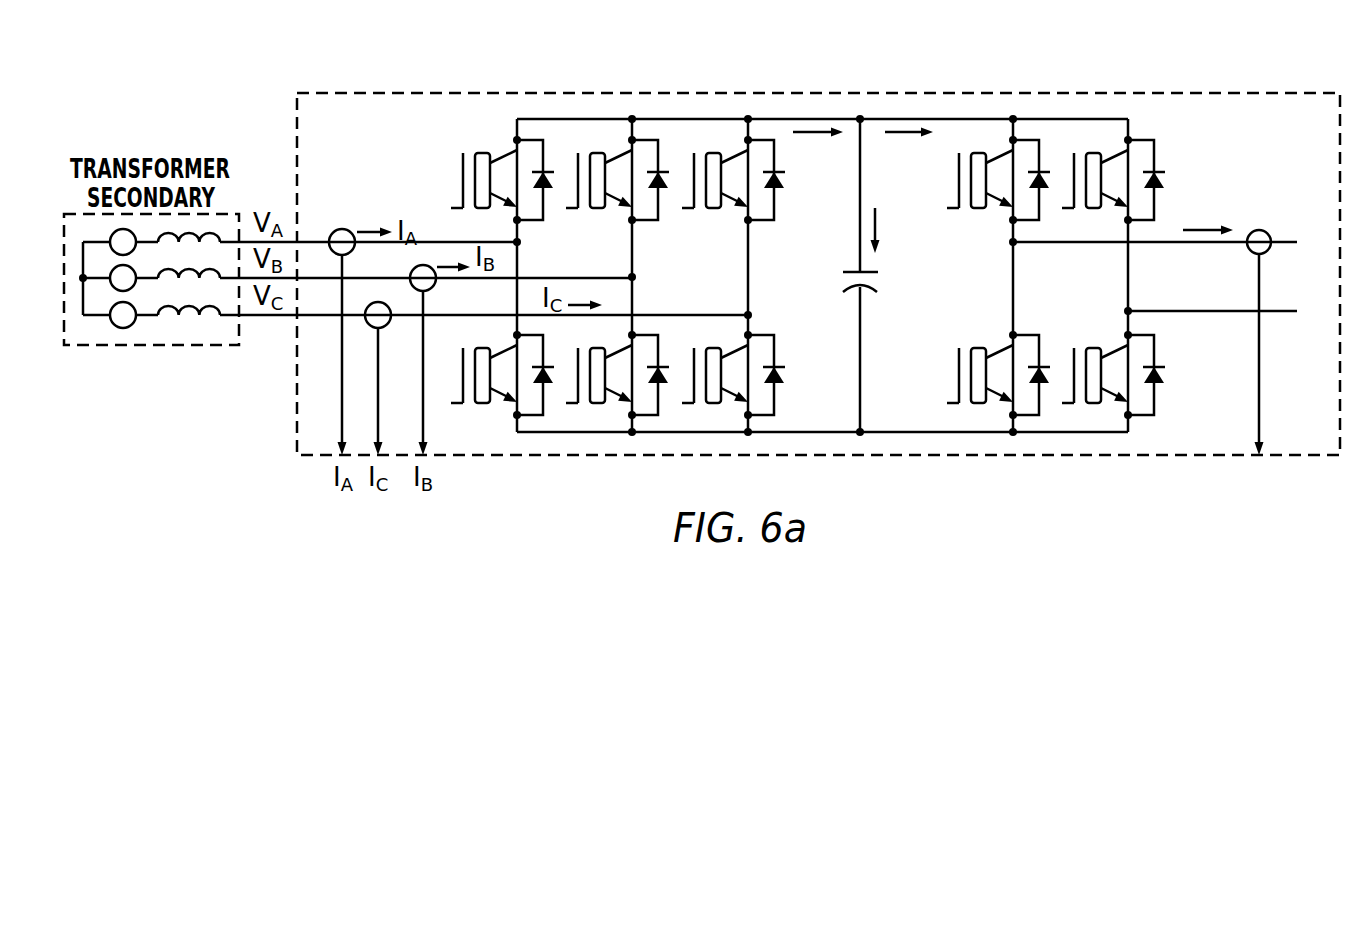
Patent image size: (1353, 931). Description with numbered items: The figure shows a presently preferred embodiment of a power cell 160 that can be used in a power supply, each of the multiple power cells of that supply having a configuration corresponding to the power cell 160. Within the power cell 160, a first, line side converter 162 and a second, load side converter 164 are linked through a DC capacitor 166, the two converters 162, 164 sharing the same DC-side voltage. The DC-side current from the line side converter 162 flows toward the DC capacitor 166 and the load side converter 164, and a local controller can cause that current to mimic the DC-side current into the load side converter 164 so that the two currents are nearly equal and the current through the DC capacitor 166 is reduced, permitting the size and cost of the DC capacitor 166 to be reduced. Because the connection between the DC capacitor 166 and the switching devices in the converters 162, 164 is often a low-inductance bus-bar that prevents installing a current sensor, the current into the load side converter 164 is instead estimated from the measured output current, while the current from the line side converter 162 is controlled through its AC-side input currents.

The power cell 160 is at (362, 93).
The line side converter 162 is at (770, 80).
The load side converter 164 is at (1177, 80).
The DC capacitor 166 is at (950, 80).